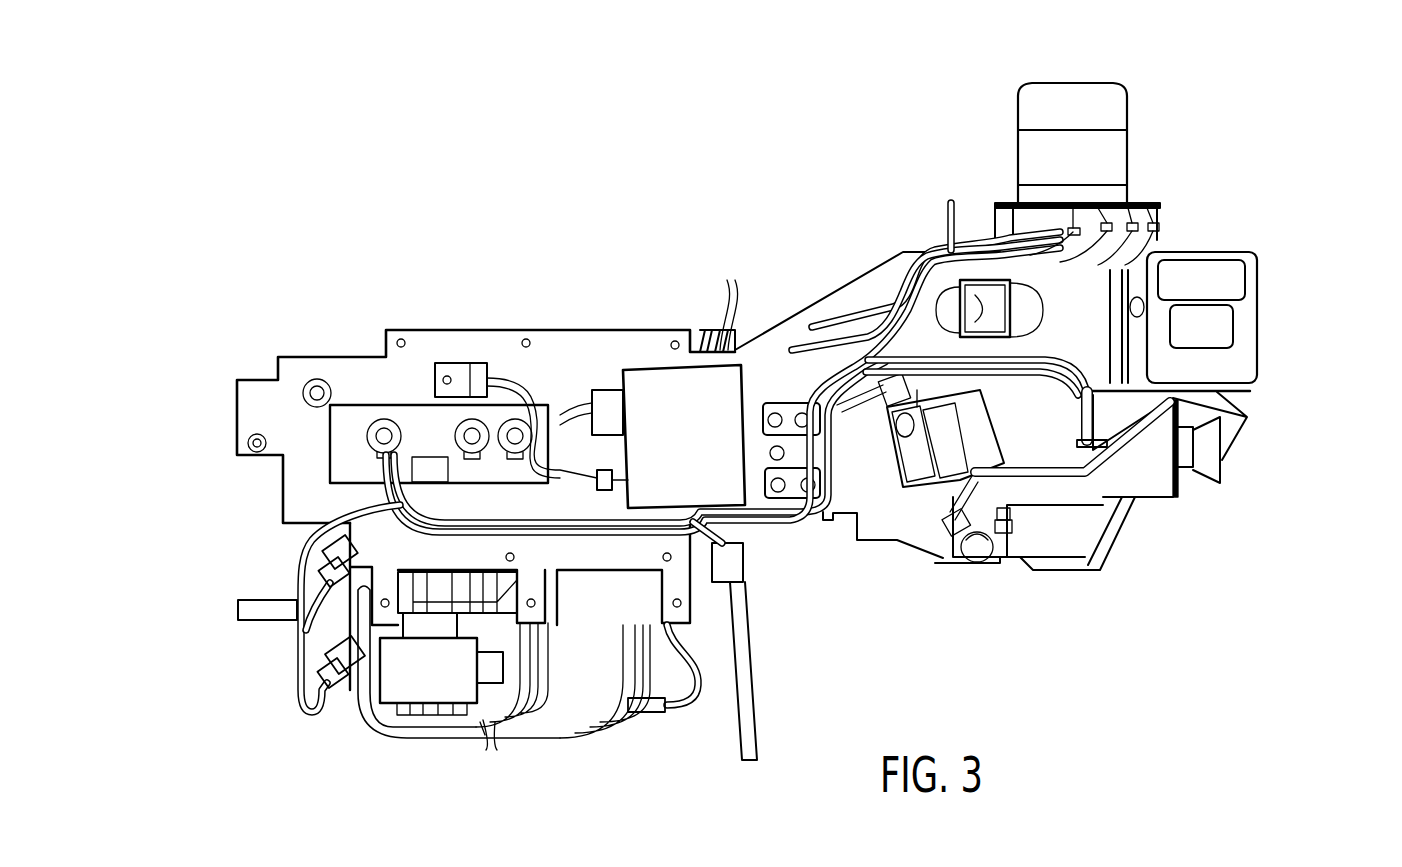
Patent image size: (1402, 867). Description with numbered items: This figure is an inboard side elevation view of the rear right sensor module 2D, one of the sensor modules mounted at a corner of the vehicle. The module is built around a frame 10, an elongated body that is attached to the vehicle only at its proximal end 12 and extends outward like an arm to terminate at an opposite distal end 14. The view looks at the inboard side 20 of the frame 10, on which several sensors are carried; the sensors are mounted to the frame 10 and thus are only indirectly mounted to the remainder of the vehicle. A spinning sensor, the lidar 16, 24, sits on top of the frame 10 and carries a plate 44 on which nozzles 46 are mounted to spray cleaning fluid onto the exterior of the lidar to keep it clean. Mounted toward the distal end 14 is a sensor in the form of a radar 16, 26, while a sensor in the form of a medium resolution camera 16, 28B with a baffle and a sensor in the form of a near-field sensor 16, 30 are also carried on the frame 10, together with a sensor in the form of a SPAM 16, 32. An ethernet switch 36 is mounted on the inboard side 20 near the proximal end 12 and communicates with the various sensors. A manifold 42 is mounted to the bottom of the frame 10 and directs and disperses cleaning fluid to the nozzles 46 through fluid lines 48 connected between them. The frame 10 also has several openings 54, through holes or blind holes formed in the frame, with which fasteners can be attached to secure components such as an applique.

The rear right sensor module 2D is at (284, 202).
The frame 10 is at (888, 515).
The proximal end 12 is at (201, 403).
The distal end 14 is at (1271, 281).
The motor 16, 24 is at (1113, 148).
The control unit 16, 26 is at (1245, 348).
The camera 16, 28B is at (990, 297).
The sensor box 16, 30 is at (917, 470).
The electronics box 16, 32 is at (668, 380).
The inboard side 20 is at (753, 477).
The ethernet switch 36 is at (415, 418).
The manifold 42 is at (408, 690).
The plate 44 is at (1043, 202).
The nozzles 46 is at (1131, 204).
The fluid lines 48 is at (1005, 215).
The openings 54 is at (403, 340).